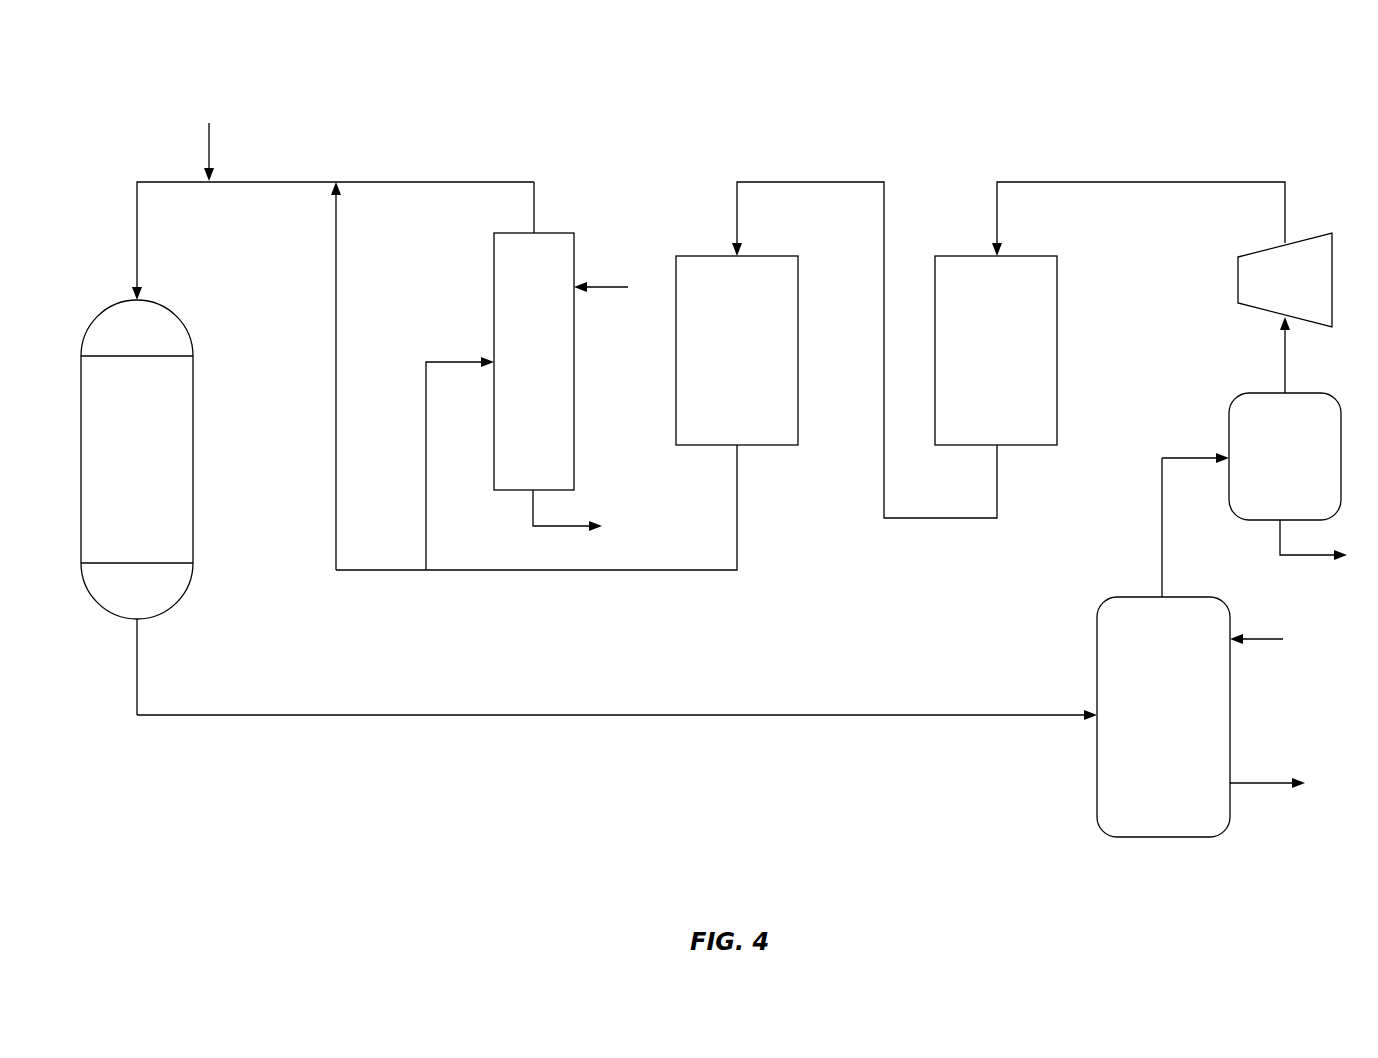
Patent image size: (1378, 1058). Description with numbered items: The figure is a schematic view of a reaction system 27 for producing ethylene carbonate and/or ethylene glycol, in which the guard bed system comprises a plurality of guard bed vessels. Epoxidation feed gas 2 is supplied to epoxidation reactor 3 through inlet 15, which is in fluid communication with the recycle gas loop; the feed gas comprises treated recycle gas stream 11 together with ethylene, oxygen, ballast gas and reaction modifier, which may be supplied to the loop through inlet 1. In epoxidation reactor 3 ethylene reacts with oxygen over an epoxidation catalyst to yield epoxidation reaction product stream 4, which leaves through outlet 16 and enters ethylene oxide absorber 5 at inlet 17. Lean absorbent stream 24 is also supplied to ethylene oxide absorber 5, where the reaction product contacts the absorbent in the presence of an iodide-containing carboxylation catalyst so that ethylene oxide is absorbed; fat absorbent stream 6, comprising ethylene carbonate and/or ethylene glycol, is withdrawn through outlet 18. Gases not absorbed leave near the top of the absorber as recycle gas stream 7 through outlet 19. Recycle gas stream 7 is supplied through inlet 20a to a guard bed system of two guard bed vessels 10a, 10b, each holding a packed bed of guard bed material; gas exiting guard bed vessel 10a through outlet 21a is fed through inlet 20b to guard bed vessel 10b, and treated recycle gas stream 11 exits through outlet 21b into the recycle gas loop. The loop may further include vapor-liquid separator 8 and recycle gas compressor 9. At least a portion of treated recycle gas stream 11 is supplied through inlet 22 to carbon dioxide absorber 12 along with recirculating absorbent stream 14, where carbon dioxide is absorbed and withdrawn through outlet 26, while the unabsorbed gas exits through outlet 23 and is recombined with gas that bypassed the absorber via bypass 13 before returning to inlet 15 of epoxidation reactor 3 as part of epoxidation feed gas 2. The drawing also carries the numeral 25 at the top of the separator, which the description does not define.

The inlet 1 is at (207, 150).
The epoxidation feed gas 2 is at (135, 241).
The epoxidation reactor 3 is at (137, 459).
The epoxidation reaction product stream 4 is at (516, 713).
The ethylene oxide absorber 5 is at (1163, 717).
The fat absorbent stream 6 is at (1258, 781).
The recycle gas stream 7 is at (1141, 181).
The vapor-liquid separator 8 is at (1288, 476).
The recycle gas compressor 9 is at (1285, 313).
The guard bed vessel 10a is at (996, 350).
The guard bed vessel 10b is at (737, 350).
The treated recycle gas stream 11 is at (607, 571).
The carbon dioxide absorber 12 is at (534, 361).
The bypass 13 is at (334, 376).
The recirculating absorbent stream 14 is at (616, 288).
The inlet 15 is at (140, 299).
The outlet 16 is at (138, 619).
The inlet 17 is at (1095, 712).
The outlet 18 is at (1233, 785).
The outlet 19 is at (1165, 596).
The inlet 20a is at (1000, 253).
The inlet 20b is at (740, 253).
The outlet 21a is at (999, 446).
The outlet 21b is at (739, 446).
The inlet 22 is at (493, 360).
The outlet 23 is at (538, 233).
The lean absorbent stream 24 is at (1265, 641).
The treatment unit outlet 25 is at (1288, 392).
The outlet 26 is at (532, 491).
The reaction system 27 is at (1258, 85).